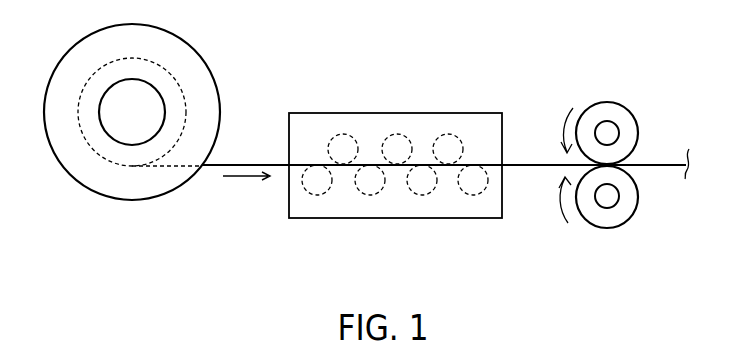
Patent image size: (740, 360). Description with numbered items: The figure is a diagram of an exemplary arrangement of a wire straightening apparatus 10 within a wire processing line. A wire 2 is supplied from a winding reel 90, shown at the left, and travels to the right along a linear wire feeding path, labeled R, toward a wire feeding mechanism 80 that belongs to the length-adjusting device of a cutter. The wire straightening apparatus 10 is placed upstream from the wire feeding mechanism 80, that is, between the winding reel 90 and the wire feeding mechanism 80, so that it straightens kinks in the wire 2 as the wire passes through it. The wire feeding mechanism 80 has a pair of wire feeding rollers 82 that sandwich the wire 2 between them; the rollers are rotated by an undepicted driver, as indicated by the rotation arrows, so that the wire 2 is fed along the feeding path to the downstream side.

The wire 2 is at (83, 85).
The wire straightening apparatus 10 is at (419, 106).
The wire feeding mechanism 80 is at (626, 125).
The wire feeding rollers 82 is at (630, 187).
The winding reel 90 is at (192, 45).